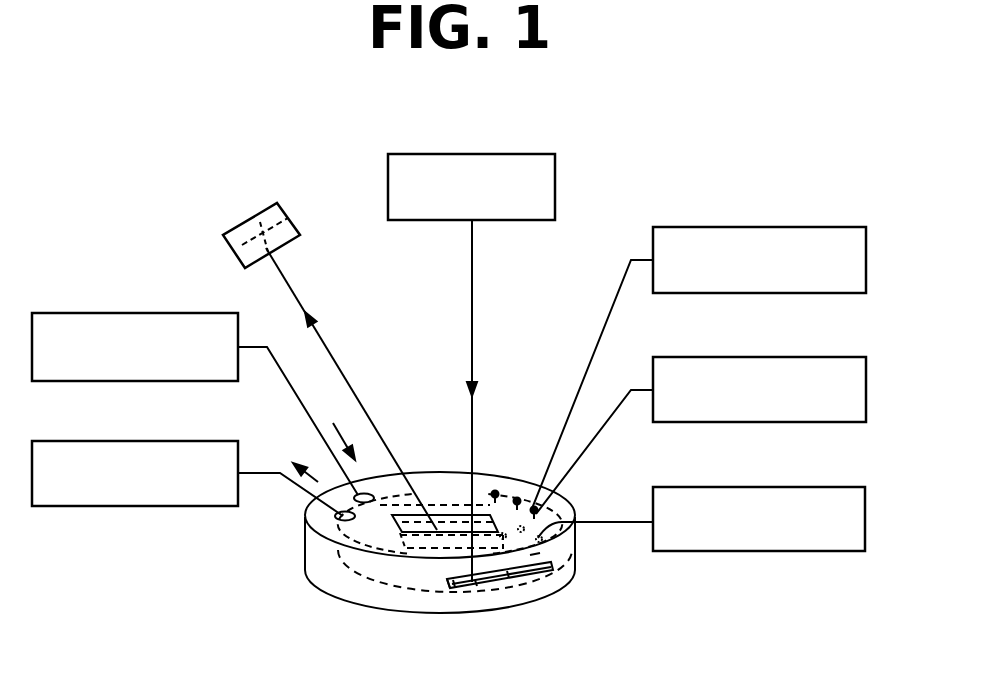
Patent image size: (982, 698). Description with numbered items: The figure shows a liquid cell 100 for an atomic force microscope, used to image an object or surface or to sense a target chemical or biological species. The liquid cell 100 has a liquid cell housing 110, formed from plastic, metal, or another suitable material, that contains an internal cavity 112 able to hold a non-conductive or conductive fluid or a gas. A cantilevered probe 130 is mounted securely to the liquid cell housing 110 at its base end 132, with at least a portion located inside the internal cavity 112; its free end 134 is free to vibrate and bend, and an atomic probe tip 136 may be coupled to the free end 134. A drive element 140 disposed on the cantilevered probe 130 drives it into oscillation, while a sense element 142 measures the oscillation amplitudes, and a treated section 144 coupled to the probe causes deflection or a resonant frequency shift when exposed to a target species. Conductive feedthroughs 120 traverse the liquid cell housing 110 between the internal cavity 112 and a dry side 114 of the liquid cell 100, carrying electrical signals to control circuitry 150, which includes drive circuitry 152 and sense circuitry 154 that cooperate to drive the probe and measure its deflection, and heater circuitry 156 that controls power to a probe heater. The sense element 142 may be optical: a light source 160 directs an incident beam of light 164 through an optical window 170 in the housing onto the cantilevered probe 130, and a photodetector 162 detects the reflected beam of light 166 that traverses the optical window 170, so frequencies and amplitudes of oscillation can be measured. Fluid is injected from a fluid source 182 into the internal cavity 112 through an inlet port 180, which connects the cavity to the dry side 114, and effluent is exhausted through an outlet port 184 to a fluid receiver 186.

The liquid cell 100 is at (132, 123).
The liquid cell housing 110 is at (320, 586).
The internal cavity 112 is at (375, 583).
The dry side 114 is at (460, 476).
The conductive feedthroughs 120 is at (495, 490).
The cantilevered probe 130 is at (461, 592).
The base end 132 is at (562, 582).
The free end 134 is at (447, 582).
The atomic probe tip 136 is at (453, 588).
The drive element 140 is at (589, 577).
The sense element 142 is at (476, 592).
The treated section 144 is at (508, 580).
The control circuitry 150 is at (761, 186).
The drive circuitry 152 is at (789, 227).
The sense circuitry 154 is at (789, 357).
The heater circuitry 156 is at (789, 487).
The light source 160 is at (478, 154).
The photodetector 162 is at (277, 203).
The incident beam of light 164 is at (473, 300).
The reflected beam of light 166 is at (329, 350).
The optical window 170 is at (424, 518).
The inlet port 180 is at (355, 498).
The fluid source 182 is at (163, 313).
The outlet port 184 is at (337, 517).
The fluid receiver 186 is at (163, 441).